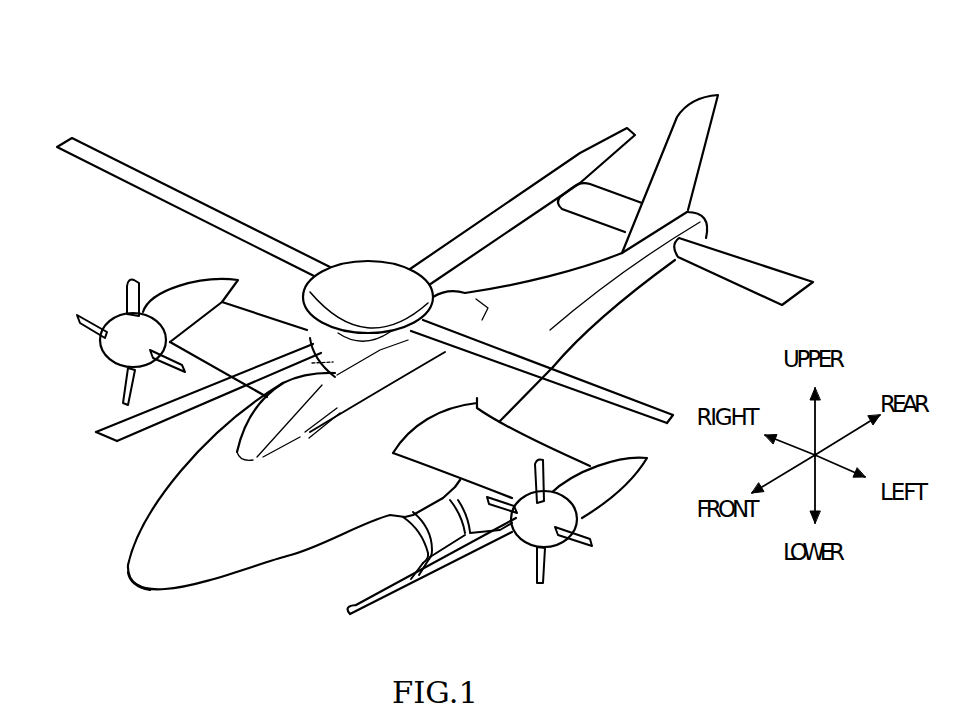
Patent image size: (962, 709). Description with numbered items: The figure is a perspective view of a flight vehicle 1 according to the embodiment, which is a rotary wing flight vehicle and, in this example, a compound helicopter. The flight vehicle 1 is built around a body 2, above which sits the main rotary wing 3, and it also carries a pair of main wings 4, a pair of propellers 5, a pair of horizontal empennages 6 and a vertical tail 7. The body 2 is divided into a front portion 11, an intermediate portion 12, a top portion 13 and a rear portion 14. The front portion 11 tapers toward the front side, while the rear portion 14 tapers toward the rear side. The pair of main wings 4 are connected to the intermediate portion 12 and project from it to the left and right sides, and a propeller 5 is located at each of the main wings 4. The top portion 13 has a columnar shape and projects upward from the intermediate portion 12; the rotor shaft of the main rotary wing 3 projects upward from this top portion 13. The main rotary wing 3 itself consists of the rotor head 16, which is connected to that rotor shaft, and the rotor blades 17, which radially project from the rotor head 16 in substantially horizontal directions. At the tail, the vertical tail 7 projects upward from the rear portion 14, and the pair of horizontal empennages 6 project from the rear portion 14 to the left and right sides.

The flight vehicle 1 is at (427, 342).
The body 2 is at (282, 562).
The main rotary wing 3 is at (365, 282).
The main wing 4 is at (213, 332).
The propeller 5 is at (77, 320).
The horizontal empennage 6 is at (787, 276).
The vertical tail 7 is at (700, 140).
The front portion 11 is at (152, 575).
The intermediate portion 12 is at (500, 404).
The top portion 13 is at (310, 363).
The rear portion 14 is at (647, 272).
The rotor head 16 is at (368, 259).
The rotor blade 17 is at (467, 230).